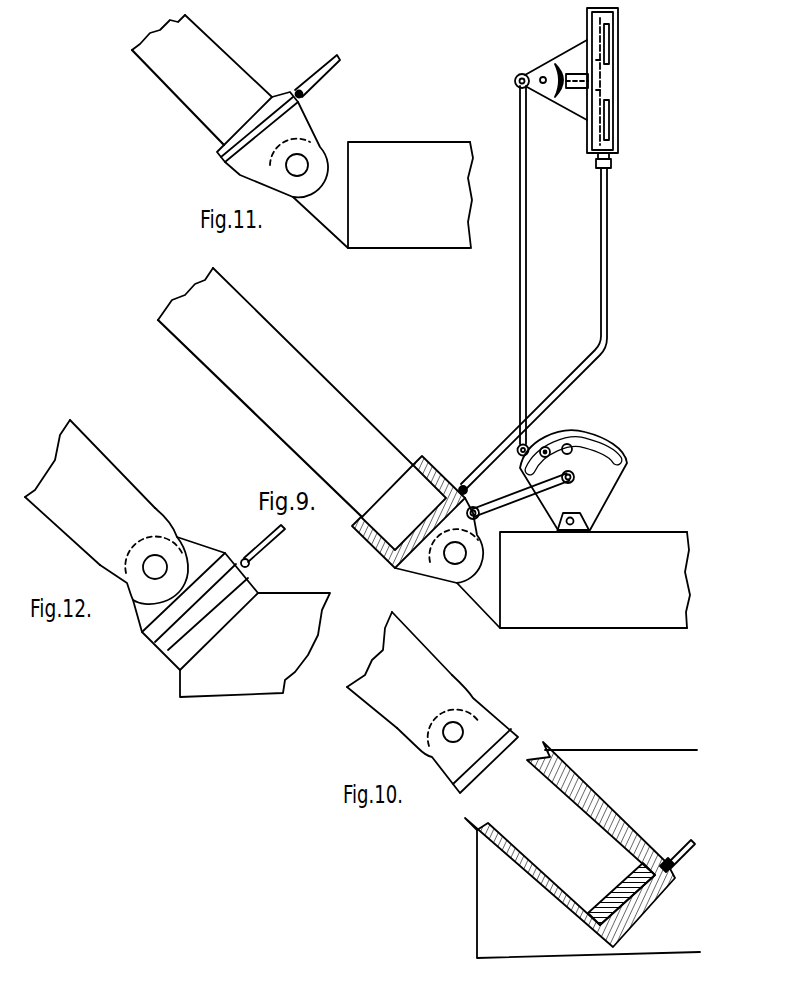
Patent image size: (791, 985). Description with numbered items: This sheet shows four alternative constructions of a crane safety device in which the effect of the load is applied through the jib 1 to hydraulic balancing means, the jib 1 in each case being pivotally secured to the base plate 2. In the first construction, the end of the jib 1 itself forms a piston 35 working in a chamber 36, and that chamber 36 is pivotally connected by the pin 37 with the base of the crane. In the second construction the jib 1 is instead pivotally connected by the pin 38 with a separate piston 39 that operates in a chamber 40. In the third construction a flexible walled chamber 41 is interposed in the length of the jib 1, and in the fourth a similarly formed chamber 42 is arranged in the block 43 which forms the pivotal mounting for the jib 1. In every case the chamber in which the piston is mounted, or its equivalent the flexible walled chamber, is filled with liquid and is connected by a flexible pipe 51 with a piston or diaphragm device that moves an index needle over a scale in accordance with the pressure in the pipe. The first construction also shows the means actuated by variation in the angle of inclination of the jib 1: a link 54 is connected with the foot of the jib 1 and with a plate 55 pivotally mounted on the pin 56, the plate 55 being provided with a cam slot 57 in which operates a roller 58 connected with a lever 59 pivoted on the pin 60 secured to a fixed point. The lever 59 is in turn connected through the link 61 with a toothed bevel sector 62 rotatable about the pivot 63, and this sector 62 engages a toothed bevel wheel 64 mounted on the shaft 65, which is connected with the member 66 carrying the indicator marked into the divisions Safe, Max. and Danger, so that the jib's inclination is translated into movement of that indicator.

In FIG. 11, the jib 1 is at (162, 68).
In FIG. 9, the jib 1 is at (305, 377).
In FIG. 12, the jib 1 is at (87, 467).
In FIG. 10, the jib 1 is at (418, 665).
In FIG. 11, the base plate 2 is at (388, 167).
In FIG. 9, the base plate 2 is at (645, 549).
In FIG. 12, the base plate 2 is at (300, 605).
In FIG. 10, the base plate 2 is at (495, 885).
In FIG. 9, the piston 35 is at (405, 493).
In FIG. 9, the chamber 36 is at (460, 487).
In FIG. 9, the pin 37 is at (452, 560).
In FIG. 10, the pin 38 is at (463, 735).
In FIG. 10, the piston 39 is at (503, 768).
In FIG. 10, the chamber 40 is at (593, 817).
In FIG. 11, the flexible walled chamber 41 is at (277, 113).
In FIG. 12, the chamber 42 is at (222, 580).
In FIG. 12, the block 43 is at (193, 548).
In FIG. 9, the flexible pipe 51 is at (602, 285).
In FIG. 9, the link 54 is at (505, 500).
In FIG. 9, the plate 55 is at (590, 480).
In FIG. 9, the pin 56 is at (572, 527).
In FIG. 9, the cam slot 57 is at (612, 452).
In FIG. 9, the roller 58 is at (569, 445).
In FIG. 9, the lever 59 is at (519, 445).
In FIG. 9, the pin 60 is at (547, 447).
In FIG. 9, the link 61 is at (522, 268).
In FIG. 9, the toothed bevel sector 62 is at (545, 75).
In FIG. 9, the pivot 63 is at (540, 75).
In FIG. 9, the toothed bevel wheel 64 is at (557, 94).
In FIG. 9, the shaft 65 is at (575, 88).
In FIG. 9, the member 66 is at (609, 62).